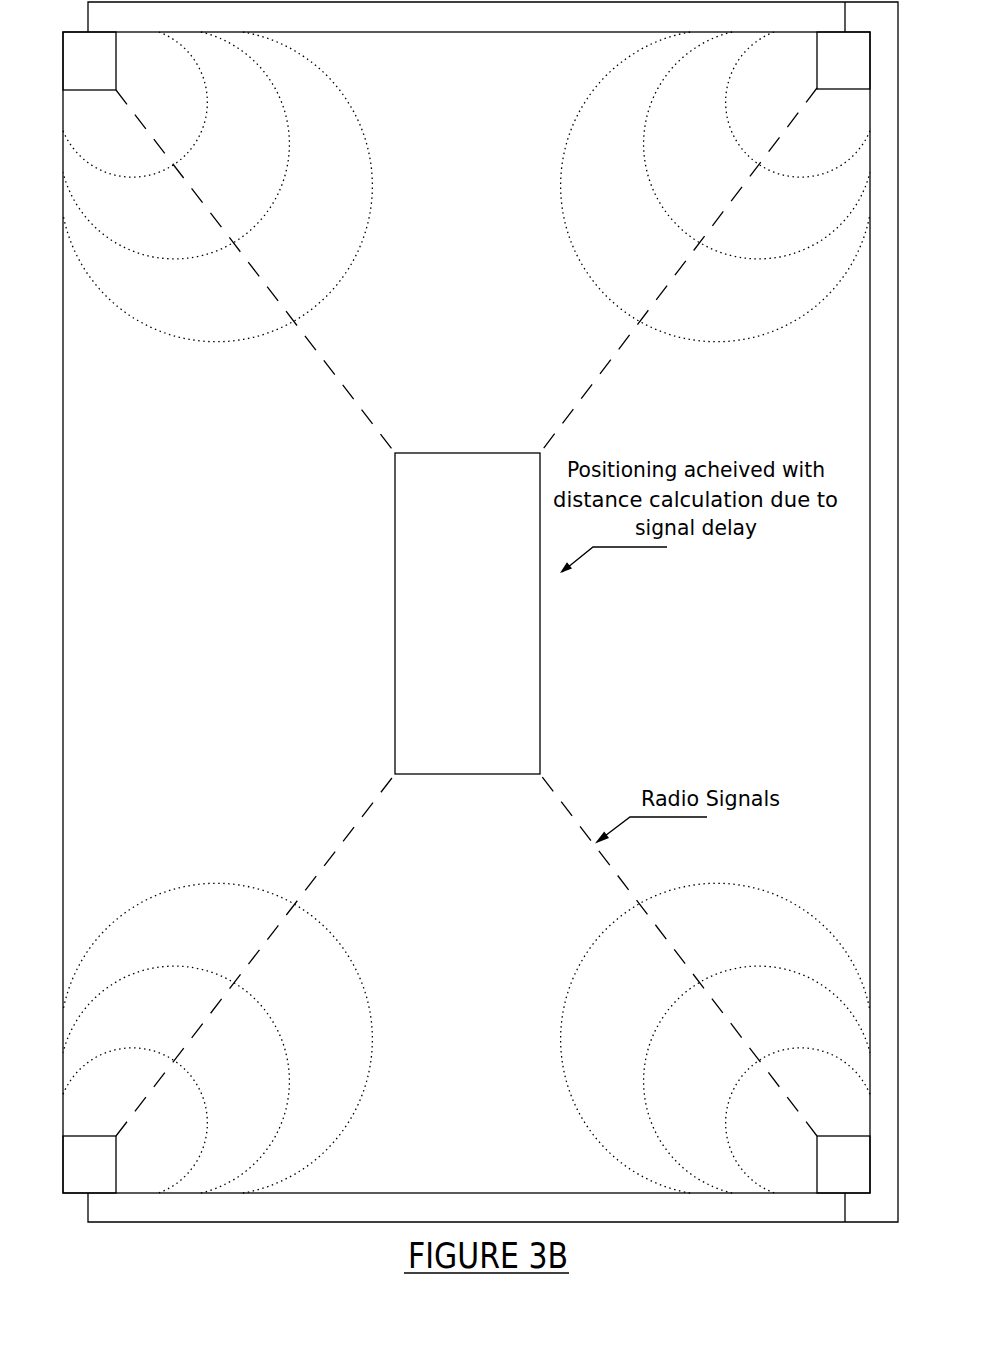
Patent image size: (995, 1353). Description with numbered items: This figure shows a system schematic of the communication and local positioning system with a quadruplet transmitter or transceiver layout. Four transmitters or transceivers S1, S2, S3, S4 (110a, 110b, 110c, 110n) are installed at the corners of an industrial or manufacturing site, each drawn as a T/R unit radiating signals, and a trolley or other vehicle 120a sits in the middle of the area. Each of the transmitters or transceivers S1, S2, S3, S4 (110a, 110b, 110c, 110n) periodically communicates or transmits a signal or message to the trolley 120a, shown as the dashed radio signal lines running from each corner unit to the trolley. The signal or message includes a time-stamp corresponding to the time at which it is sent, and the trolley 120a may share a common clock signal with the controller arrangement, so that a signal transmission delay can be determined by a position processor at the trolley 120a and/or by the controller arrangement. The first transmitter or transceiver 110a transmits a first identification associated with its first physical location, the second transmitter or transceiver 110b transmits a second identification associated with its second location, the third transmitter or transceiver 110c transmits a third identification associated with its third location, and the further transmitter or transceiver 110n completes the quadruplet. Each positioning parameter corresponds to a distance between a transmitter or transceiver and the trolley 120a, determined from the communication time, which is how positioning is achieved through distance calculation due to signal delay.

The first transmitter or transceiver 110a is at (116, 67).
The second transmitter or transceiver 110b is at (817, 67).
The third transmitter or transceiver 110c is at (116, 1158).
The transmitter or transceiver 110n is at (817, 1156).
The trolley or vehicle 120a is at (540, 668).
The transmitter or transceiver S1 is at (85, 90).
The transmitter or transceiver S2 is at (848, 89).
The transmitter or transceiver S3 is at (83, 1136).
The transmitter or transceiver S4 is at (849, 1136).